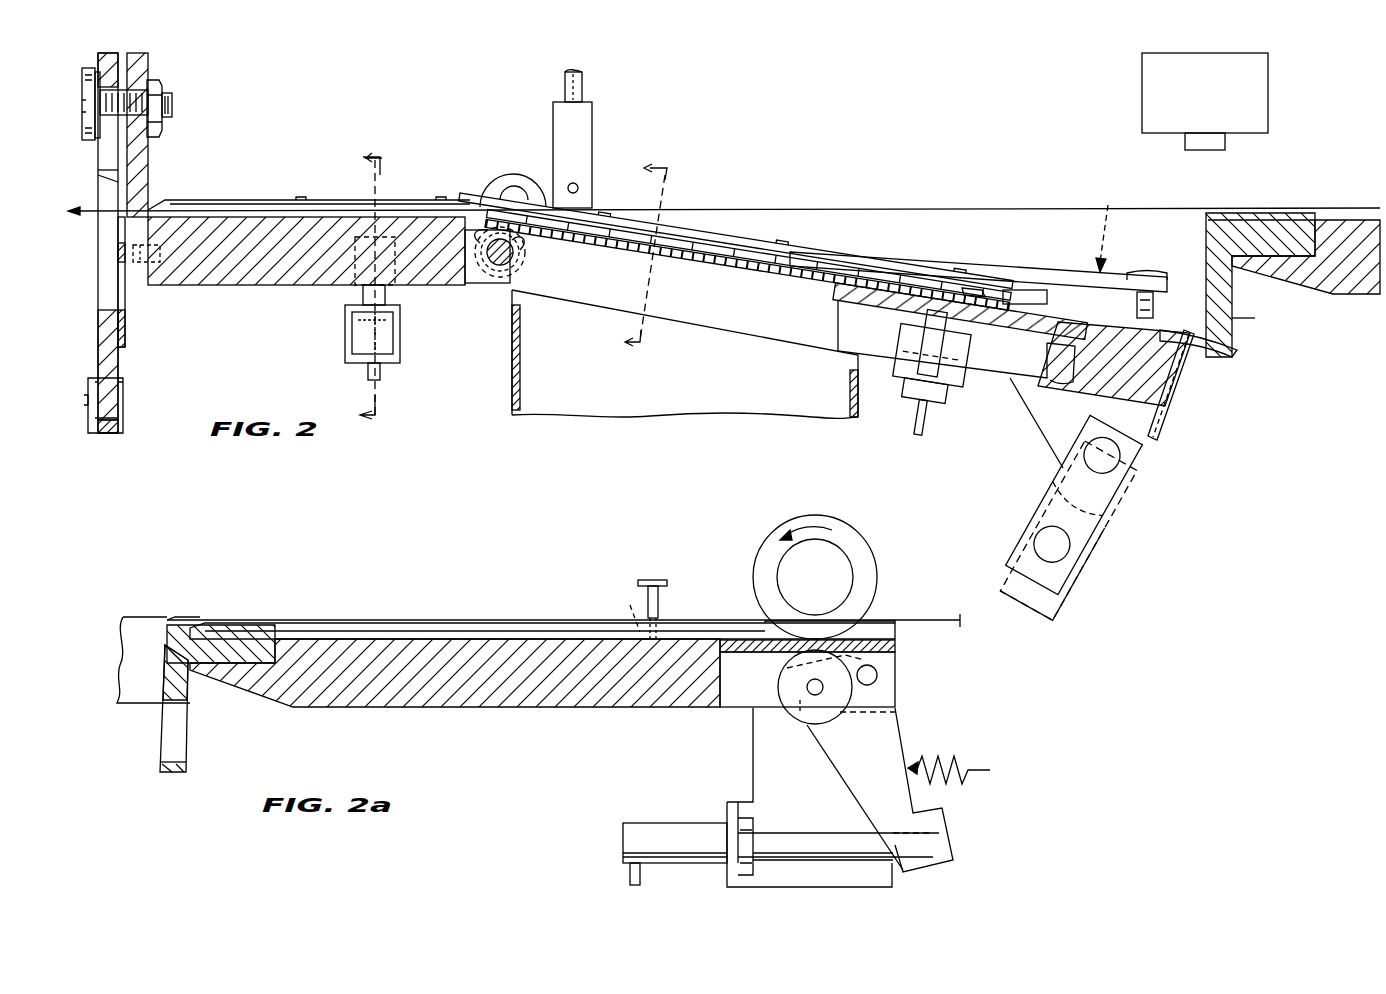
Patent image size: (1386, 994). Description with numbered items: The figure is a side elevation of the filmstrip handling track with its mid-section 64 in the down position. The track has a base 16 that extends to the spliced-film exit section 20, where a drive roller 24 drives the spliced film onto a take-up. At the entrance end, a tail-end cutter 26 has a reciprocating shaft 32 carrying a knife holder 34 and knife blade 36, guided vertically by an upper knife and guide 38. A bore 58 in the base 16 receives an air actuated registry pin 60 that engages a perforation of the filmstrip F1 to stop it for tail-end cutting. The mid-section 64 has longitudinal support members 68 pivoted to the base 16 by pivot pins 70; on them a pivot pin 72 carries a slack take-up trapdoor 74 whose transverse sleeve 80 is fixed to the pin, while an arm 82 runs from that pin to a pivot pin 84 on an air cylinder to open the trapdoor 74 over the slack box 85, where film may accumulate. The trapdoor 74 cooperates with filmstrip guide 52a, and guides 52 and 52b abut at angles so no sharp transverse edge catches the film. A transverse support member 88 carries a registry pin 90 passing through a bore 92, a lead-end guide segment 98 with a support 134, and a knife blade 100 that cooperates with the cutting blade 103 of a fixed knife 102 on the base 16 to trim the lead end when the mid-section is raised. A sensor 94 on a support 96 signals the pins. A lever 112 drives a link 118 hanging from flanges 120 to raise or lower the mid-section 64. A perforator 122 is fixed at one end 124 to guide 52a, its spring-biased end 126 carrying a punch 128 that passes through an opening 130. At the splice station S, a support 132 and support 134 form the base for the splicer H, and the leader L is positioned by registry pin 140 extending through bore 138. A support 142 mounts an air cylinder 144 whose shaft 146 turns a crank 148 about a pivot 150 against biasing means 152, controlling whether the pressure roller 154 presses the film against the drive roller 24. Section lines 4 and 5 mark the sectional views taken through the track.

In FIG. 2, the base 16 is at (1348, 305).
In FIG. 2A, the base 16 is at (395, 690).
In FIG. 2A, the spliced-film exit section 20 is at (873, 617).
In FIG. 2A, the drive roller 24 is at (762, 558).
In FIG. 2, the tail-end cutter 26 is at (150, 180).
In FIG. 2, the reciprocating shaft 32 is at (123, 412).
In FIG. 2, the knife holder 34 is at (98, 352).
In FIG. 2, the knife blade 36 is at (117, 276).
In FIG. 2, the upper knife and guide 38 is at (148, 56).
In FIG. 2, the filmstrip guide 52 is at (322, 200).
In FIG. 2, the filmstrip guide 52a is at (832, 262).
In FIG. 2A, the filmstrip guide 52b is at (392, 620).
In FIG. 2, the bore 58 is at (340, 286).
In FIG. 2, the air actuated registry pin 60 is at (385, 292).
In FIG. 2, the mid-section 64 is at (745, 278).
In FIG. 2, the longitudinal support members 68 is at (990, 375).
In FIG. 2, the pivot pins 70 is at (496, 185).
In FIG. 2, the pivot pin 72 is at (490, 275).
In FIG. 2, the slack take-up trapdoor 74 is at (606, 255).
In FIG. 2, the transverse sleeve 80 is at (515, 263).
In FIG. 2, the arm 82 is at (550, 188).
In FIG. 2, the pivot pin 84 is at (575, 184).
In FIG. 2, the slack box 85 is at (512, 376).
In FIG. 2, the transverse support member 88 is at (1048, 330).
In FIG. 2, the air actuated registry pin 90 is at (920, 410).
In FIG. 2, the bore 92 is at (975, 325).
In FIG. 2, the sensor 94 is at (1024, 290).
In FIG. 2, the support 96 is at (962, 288).
In FIG. 2, the lead-end guide segment 98 is at (1186, 350).
In FIG. 2, the knife blade 100 is at (1210, 352).
In FIG. 2, the fixed knife 102 is at (1210, 272).
In FIG. 2A, the fixed knife 102 is at (162, 668).
In FIG. 2, the cutting blade 103 is at (1255, 318).
In FIG. 2A, the cutting blade 103 is at (186, 736).
In FIG. 2, the lever 112 is at (1102, 565).
In FIG. 2, the link 118 is at (1045, 484).
In FIG. 2, the flanges 120 is at (1050, 430).
In FIG. 2, the perforator 122 is at (1108, 205).
In FIG. 2, the end 124 is at (708, 224).
In FIG. 2, the end 126 is at (1064, 262).
In FIG. 2, the punch 128 is at (1168, 284).
In FIG. 2, the opening 130 is at (1137, 302).
In FIG. 2, the support 132 is at (1208, 213).
In FIG. 2A, the support 132 is at (167, 632).
In FIG. 2, the support 134 is at (1195, 318).
In FIG. 2A, the bore 138 is at (611, 606).
In FIG. 2A, the air actuated registry pin 140 is at (645, 598).
In FIG. 2A, the support 142 is at (765, 748).
In FIG. 2A, the air cylinder 144 is at (655, 830).
In FIG. 2A, the shaft 146 is at (795, 840).
In FIG. 2A, the crank 148 is at (885, 745).
In FIG. 2A, the pivot 150 is at (878, 678).
In FIG. 2A, the biasing means 152 is at (968, 764).
In FIG. 2A, the pressure roller 154 is at (783, 680).
In FIG. 2, the section line 4 is at (362, 284).
In FIG. 2, the section line 5 is at (635, 253).
In FIG. 2, the splicer H is at (1250, 106).
In FIG. 2, the splice station S is at (1225, 207).
In FIG. 2A, the splice station S is at (192, 620).
In FIG. 2, the leader L is at (1278, 213).
In FIG. 2A, the leader L is at (456, 622).
In FIG. 2, the filmstrip F1 is at (878, 272).